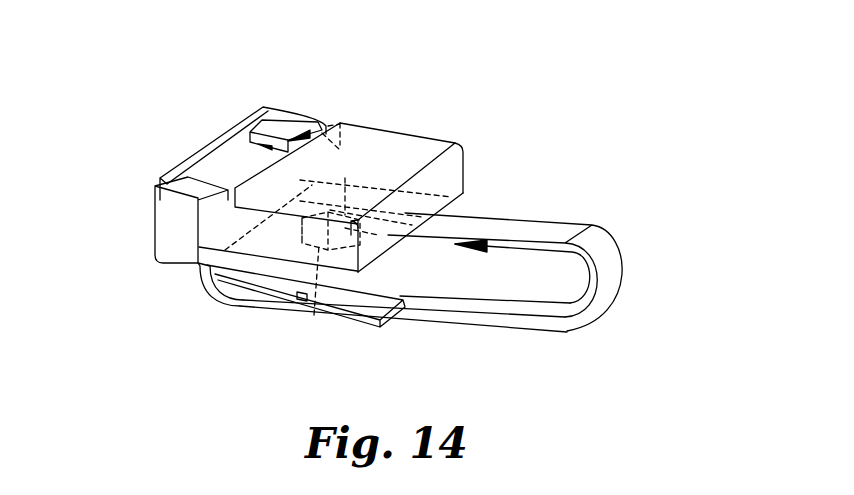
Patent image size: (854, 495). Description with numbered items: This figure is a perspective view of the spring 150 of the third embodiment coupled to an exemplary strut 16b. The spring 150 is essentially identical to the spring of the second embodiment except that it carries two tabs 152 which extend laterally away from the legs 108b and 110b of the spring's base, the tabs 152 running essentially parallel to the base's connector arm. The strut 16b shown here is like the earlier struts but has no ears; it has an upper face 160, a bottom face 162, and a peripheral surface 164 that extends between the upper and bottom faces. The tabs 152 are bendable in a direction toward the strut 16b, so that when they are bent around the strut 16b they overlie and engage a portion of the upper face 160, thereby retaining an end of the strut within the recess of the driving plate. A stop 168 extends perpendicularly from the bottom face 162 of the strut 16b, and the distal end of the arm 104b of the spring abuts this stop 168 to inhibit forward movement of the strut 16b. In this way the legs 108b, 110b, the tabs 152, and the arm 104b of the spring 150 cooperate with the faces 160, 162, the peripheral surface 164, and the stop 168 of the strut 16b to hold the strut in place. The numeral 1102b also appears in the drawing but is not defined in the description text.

The strut 16b is at (468, 173).
The arm 104b is at (509, 330).
The leg 108b is at (257, 288).
The leg 110b is at (478, 218).
The spring 150 is at (205, 284).
The tabs 152 is at (305, 118).
The upper face 160 is at (388, 160).
The bottom face 162 is at (416, 263).
The peripheral surface 164 is at (300, 302).
The stop 168 is at (314, 315).
The boss 1102b is at (357, 272).